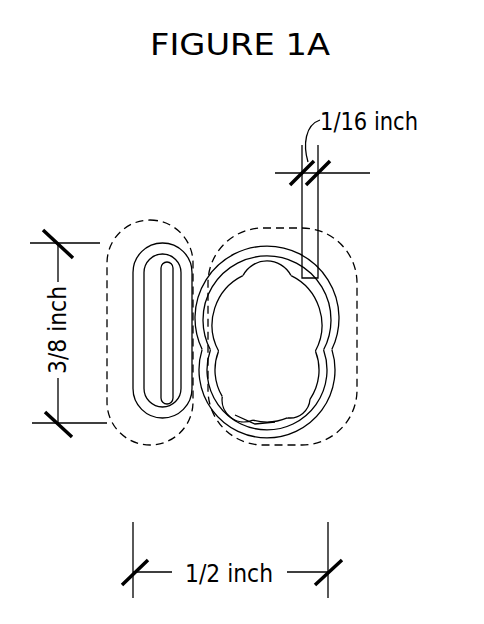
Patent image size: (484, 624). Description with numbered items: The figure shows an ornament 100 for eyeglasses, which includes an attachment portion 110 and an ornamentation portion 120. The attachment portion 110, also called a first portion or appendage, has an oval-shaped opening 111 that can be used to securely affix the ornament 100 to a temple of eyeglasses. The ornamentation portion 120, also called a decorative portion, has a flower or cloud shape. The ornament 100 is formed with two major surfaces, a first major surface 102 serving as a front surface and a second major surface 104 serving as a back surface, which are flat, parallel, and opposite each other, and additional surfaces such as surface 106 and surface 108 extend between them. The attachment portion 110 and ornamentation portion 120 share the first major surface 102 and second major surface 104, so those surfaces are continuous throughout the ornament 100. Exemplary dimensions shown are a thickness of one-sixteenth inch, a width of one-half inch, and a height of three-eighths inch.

The ornament 100 is at (177, 203).
The attachment portion 110 is at (153, 220).
The oval-shaped opening 111 is at (173, 280).
The second major surface 104 is at (335, 285).
The additional surface 106 is at (335, 358).
The first major surface 102 is at (313, 390).
The additional surface 108 is at (235, 415).
The ornamentation portion 120 is at (337, 233).